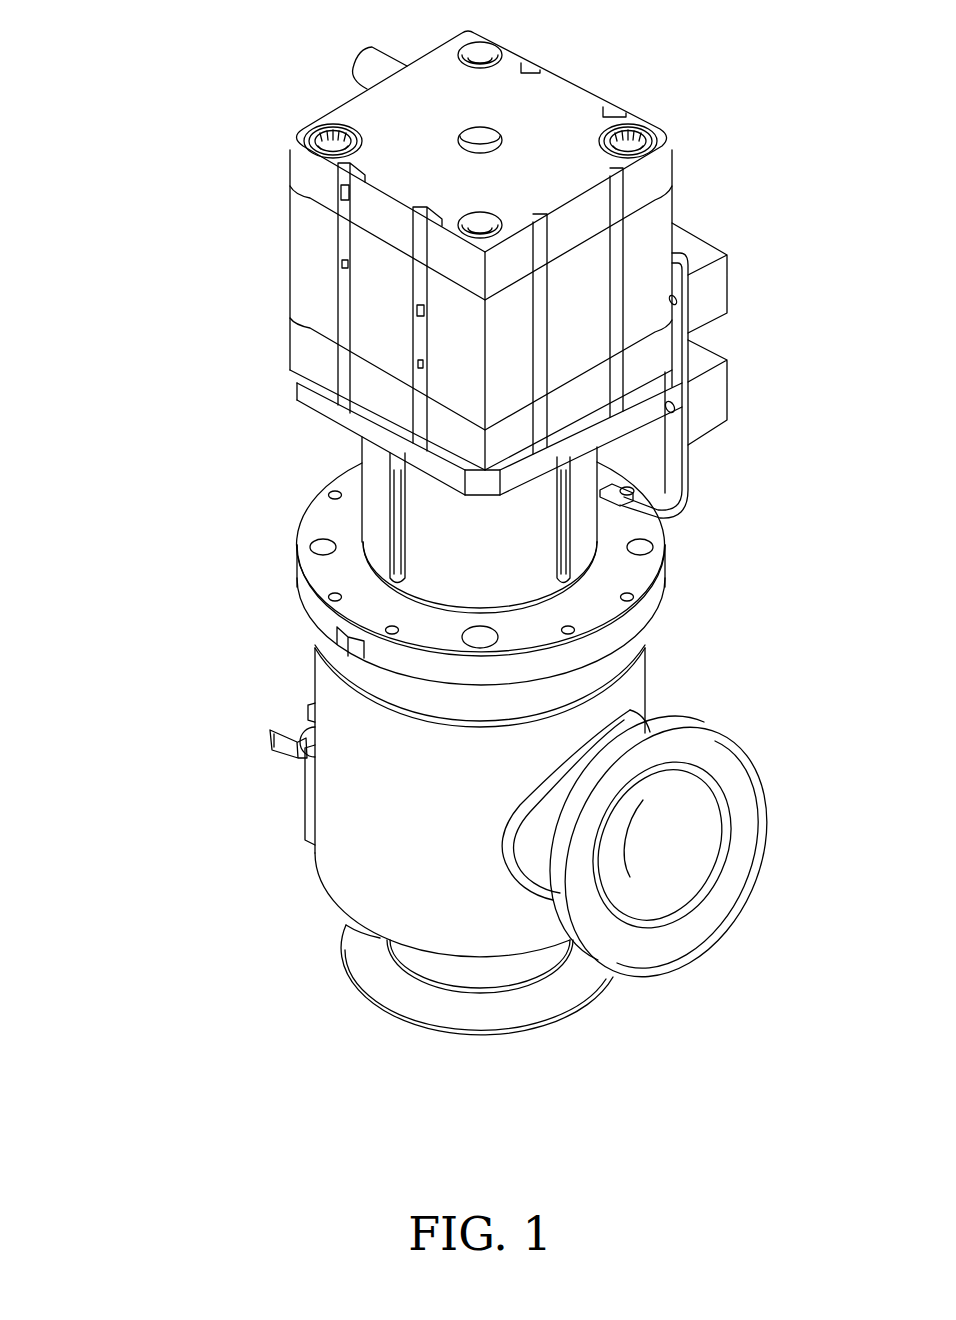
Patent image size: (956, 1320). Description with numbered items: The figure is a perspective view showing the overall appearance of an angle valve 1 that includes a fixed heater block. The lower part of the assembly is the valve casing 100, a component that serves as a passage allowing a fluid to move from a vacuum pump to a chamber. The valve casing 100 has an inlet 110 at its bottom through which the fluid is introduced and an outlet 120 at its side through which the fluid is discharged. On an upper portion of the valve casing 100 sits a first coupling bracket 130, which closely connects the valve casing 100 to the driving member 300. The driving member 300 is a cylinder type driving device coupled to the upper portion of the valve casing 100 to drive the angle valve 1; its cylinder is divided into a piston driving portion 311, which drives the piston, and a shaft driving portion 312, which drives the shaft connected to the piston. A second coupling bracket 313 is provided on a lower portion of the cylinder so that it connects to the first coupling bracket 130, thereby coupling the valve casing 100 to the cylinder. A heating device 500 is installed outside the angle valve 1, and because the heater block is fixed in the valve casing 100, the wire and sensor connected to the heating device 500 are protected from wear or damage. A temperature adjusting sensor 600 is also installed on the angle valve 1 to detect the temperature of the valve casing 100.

The angle valve 1 is at (172, 50).
The valve casing 100 is at (345, 857).
The inlet 110 is at (380, 977).
The outlet 120 is at (653, 953).
The first coupling bracket 130 is at (652, 632).
The driving member 300 is at (103, 300).
The piston driving portion 311 is at (300, 294).
The shaft driving portion 312 is at (372, 483).
The second coupling bracket 313 is at (323, 615).
The heating device 500 is at (713, 288).
The temperature adjusting sensor 600 is at (308, 803).